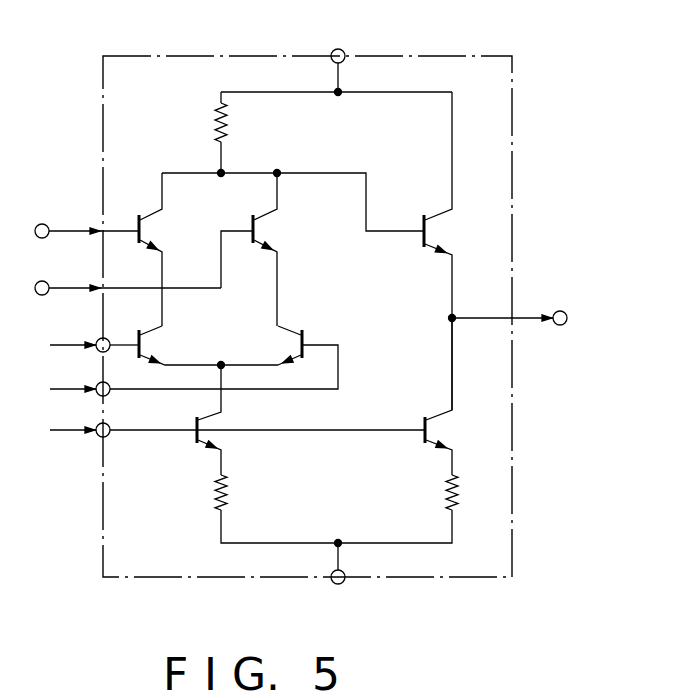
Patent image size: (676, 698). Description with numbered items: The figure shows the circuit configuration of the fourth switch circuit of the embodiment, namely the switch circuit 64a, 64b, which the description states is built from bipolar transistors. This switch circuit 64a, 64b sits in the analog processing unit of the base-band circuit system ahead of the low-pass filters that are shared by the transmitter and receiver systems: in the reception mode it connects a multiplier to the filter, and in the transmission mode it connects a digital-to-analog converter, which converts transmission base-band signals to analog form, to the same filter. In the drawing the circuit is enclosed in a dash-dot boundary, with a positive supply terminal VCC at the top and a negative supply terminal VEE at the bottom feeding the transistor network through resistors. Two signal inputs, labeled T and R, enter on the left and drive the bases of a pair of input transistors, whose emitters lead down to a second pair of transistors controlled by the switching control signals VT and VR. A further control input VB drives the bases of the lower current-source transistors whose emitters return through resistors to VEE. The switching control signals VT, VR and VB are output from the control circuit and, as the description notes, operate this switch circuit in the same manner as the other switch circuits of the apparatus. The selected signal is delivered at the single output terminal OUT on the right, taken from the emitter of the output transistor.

The switch circuit 64a is at (313, 313).
The switch circuit 64b is at (313, 313).
The positive supply terminal VCC is at (338, 52).
The negative supply terminal VEE is at (340, 579).
The T input terminal T is at (75, 232).
The R input terminal R is at (116, 289).
The switching control signal VT is at (74, 346).
The switching control signal VR is at (60, 390).
The switching control signal VB is at (60, 431).
The output terminal OUT is at (534, 317).